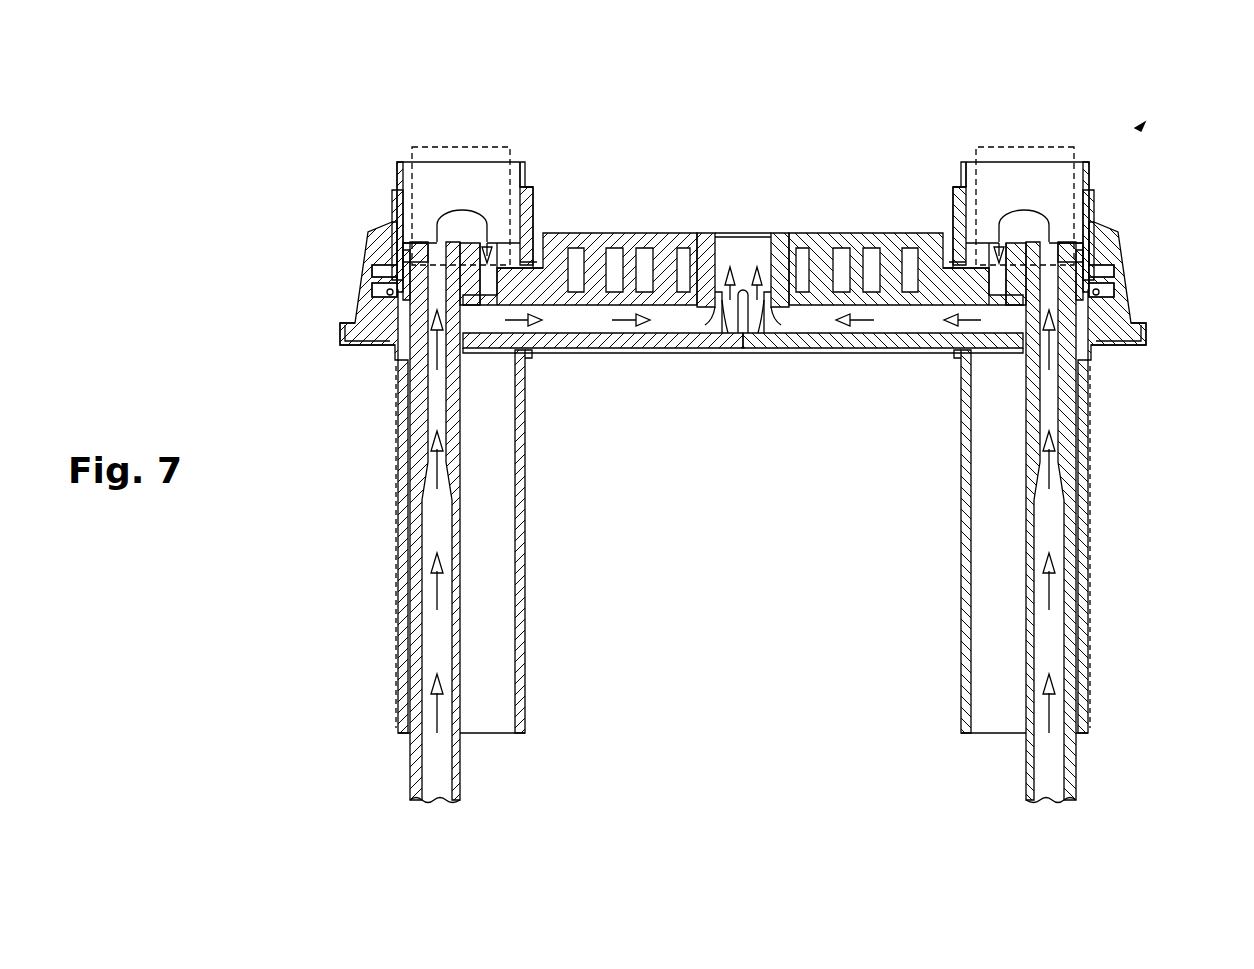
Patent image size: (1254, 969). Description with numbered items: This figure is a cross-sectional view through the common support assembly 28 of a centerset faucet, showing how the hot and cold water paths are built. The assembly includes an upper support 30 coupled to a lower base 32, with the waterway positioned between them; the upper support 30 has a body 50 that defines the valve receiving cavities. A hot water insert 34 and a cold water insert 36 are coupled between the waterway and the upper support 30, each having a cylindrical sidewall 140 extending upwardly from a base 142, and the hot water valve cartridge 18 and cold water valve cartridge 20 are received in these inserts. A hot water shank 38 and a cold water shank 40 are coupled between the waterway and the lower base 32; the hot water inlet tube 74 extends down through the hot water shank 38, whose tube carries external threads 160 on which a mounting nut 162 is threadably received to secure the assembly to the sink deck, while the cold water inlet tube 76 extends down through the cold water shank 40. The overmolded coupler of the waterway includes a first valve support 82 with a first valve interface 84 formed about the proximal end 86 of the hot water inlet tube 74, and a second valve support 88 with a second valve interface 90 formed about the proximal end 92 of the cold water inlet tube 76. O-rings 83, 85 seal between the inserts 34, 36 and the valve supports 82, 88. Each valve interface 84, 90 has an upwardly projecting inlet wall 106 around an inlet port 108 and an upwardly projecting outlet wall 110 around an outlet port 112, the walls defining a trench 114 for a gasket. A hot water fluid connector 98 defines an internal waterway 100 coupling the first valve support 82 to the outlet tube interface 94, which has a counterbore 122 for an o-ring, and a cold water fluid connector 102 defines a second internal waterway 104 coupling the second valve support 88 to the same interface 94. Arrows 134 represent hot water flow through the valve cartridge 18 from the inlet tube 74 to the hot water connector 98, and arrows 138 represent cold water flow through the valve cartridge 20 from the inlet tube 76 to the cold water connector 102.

The hot water valve cartridge 18 is at (462, 147).
The cold water valve cartridge 20 is at (1022, 147).
The common support assembly 28 is at (1135, 128).
The upper support 30 is at (1128, 228).
The lower base 32 is at (745, 345).
The hot water insert 34 is at (526, 170).
The cold water insert 36 is at (960, 170).
The hot water shank 38 is at (398, 655).
The cold water shank 40 is at (1088, 655).
The body 50 is at (365, 262).
The hot water inlet tube 74 is at (460, 775).
The cold water inlet tube 76 is at (1025, 775).
The first valve support 82 is at (383, 236).
The o-ring 83 is at (375, 278).
The first valve interface 84 is at (457, 215).
The o-ring 85 is at (1112, 278).
The proximal end 86 is at (385, 295).
The second valve support 88 is at (1110, 250).
The second valve interface 90 is at (1040, 212).
The proximal end 92 is at (1130, 300).
The outlet tube interface 94 is at (780, 240).
The hot water fluid connector 98 is at (550, 345).
The internal waterway 100 is at (640, 325).
The cold water fluid connector 102 is at (900, 345).
The second internal waterway 104 is at (818, 325).
The inlet wall 106 is at (396, 200).
The inlet port 108 is at (404, 163).
The outlet wall 110 is at (530, 262).
The outlet port 112 is at (494, 255).
The trench 114 is at (487, 240).
The counterbore 122 is at (740, 232).
The arrows 134 is at (437, 585).
The arrows 138 is at (1050, 585).
The cylindrical sidewall 140 is at (347, 342).
The base 142 is at (523, 725).
The external threads 160 is at (1142, 342).
The mounting nut 162 is at (963, 728).